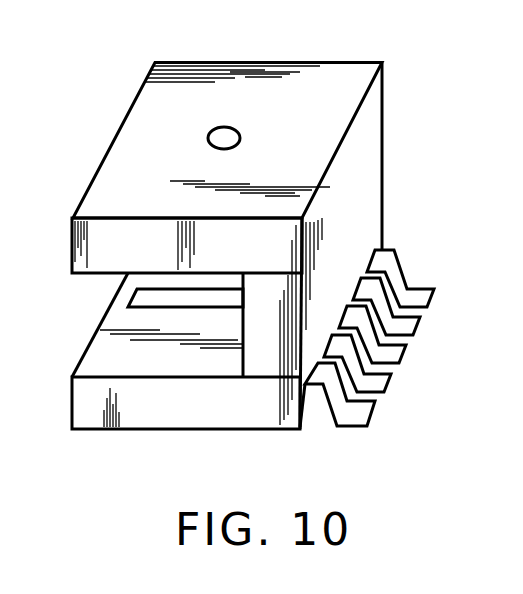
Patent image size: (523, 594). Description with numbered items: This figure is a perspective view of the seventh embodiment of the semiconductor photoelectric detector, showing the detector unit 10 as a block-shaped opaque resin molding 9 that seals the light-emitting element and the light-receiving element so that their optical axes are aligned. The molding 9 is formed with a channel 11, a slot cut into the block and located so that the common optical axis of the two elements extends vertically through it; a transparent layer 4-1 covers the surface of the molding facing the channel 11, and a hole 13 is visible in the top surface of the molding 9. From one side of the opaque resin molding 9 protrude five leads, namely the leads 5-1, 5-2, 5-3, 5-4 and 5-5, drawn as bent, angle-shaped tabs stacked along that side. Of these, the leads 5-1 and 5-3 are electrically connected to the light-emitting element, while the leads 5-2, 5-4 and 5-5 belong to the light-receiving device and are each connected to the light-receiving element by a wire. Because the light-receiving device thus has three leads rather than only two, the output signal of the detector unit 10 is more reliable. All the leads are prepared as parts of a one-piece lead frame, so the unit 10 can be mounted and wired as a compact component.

The opaque resin molding 9 is at (318, 67).
The hole 13 is at (240, 132).
The detector unit 10 is at (60, 408).
The channel 11 is at (90, 311).
The transparent layer 4-1 is at (186, 297).
The lead 5-1 is at (376, 402).
The lead 5-2 is at (420, 318).
The lead 5-3 is at (434, 290).
The lead 5-4 is at (406, 346).
The lead 5-5 is at (391, 375).